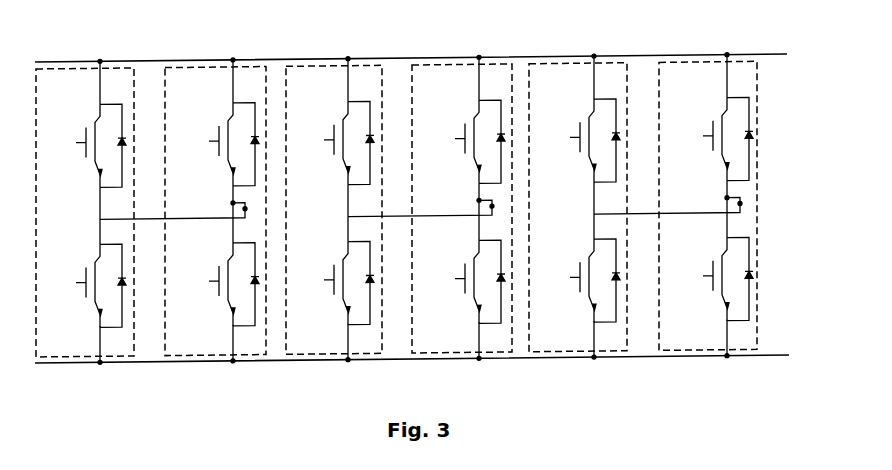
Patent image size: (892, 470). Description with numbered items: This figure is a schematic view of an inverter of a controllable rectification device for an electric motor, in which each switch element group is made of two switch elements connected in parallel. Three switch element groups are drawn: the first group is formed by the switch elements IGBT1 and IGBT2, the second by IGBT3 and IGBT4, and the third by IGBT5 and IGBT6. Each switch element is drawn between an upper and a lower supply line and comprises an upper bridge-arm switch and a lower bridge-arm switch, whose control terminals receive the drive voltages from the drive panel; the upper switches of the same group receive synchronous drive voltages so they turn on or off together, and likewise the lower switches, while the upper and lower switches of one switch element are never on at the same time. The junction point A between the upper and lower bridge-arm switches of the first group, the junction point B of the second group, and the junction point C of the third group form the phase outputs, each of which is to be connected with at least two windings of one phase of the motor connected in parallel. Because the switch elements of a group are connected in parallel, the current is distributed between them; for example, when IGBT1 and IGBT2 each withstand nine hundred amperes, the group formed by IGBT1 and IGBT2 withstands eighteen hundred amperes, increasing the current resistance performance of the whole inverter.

The switch element IGBT1 is at (85, 67).
The switch element IGBT2 is at (216, 67).
The switch element IGBT3 is at (333, 67).
The switch element IGBT4 is at (464, 67).
The switch element IGBT5 is at (579, 67).
The switch element IGBT6 is at (712, 67).
The junction point A is at (245, 211).
The junction point B is at (492, 211).
The junction point C is at (740, 211).